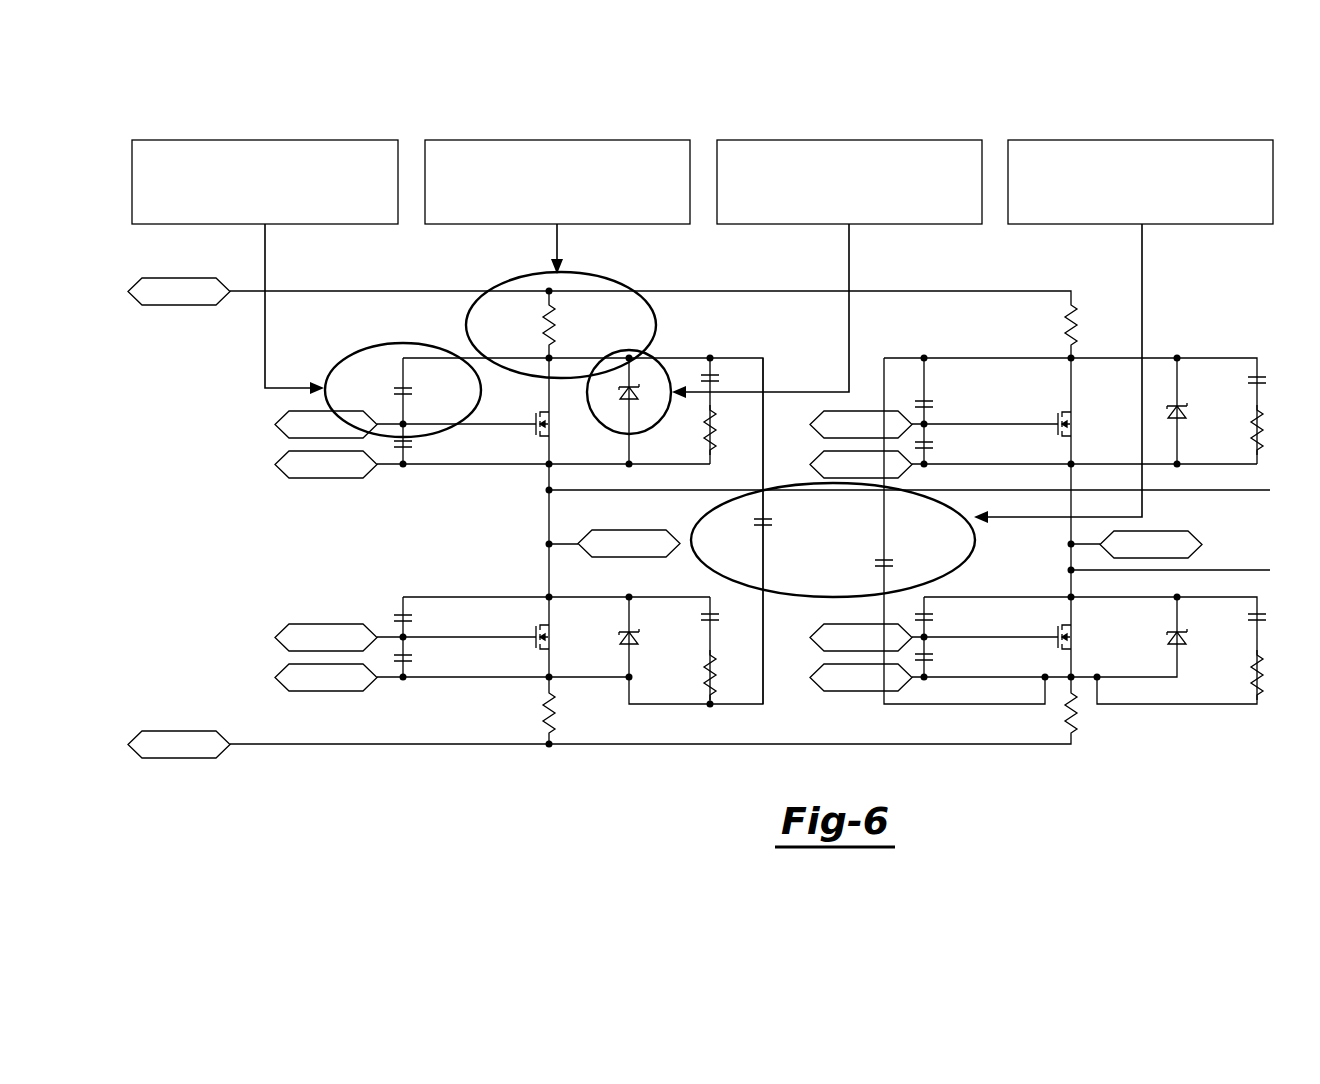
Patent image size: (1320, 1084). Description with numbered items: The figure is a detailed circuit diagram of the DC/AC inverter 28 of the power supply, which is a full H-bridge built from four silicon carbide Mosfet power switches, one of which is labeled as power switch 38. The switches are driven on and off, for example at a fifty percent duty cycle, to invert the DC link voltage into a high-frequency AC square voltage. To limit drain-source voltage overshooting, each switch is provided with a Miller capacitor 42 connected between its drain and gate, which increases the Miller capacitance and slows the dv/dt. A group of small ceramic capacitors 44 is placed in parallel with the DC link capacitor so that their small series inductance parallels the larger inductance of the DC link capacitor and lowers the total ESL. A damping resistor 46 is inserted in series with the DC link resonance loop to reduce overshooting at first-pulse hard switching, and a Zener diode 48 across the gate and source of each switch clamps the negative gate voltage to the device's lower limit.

The DC/AC inverter 28 is at (1124, 66).
The power switch 38 is at (522, 433).
The Miller capacitor 42 is at (322, 142).
The small ceramic capacitors 44 is at (1198, 142).
The damping resistor 46 is at (613, 142).
The Zener diode 48 is at (907, 142).